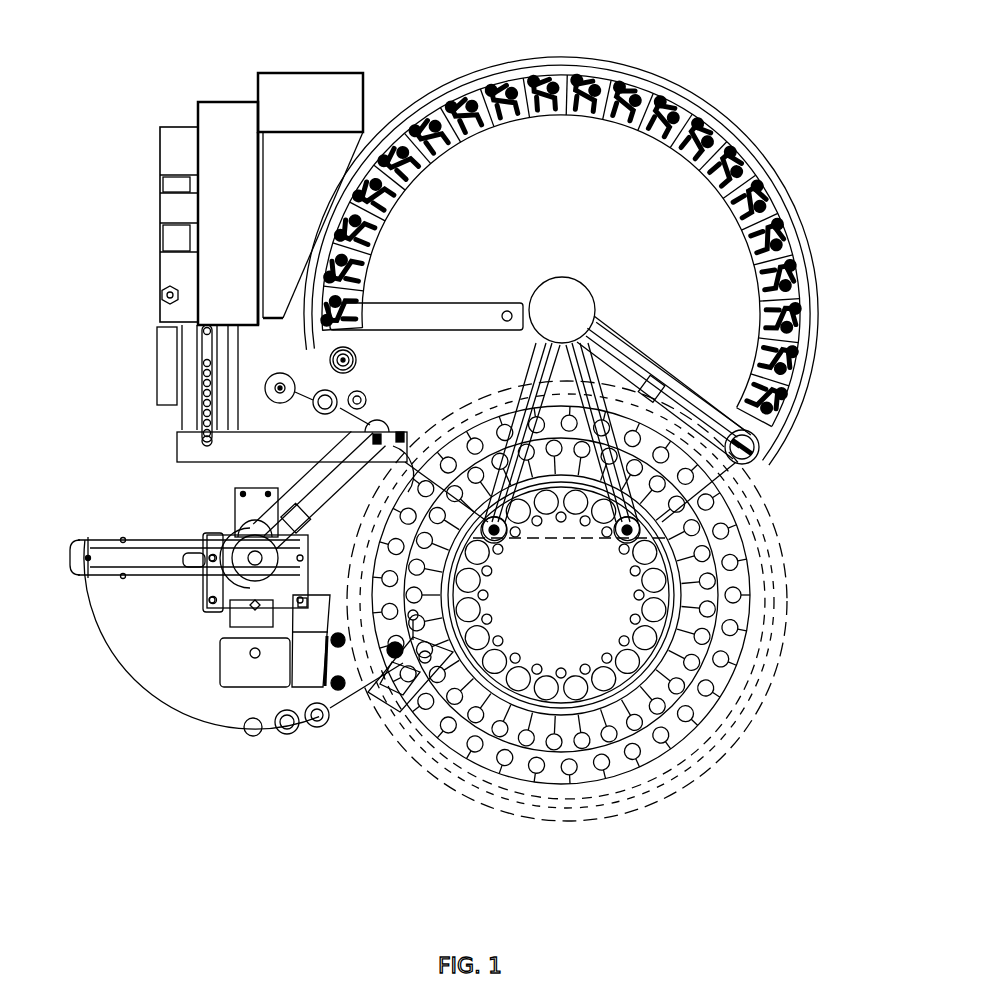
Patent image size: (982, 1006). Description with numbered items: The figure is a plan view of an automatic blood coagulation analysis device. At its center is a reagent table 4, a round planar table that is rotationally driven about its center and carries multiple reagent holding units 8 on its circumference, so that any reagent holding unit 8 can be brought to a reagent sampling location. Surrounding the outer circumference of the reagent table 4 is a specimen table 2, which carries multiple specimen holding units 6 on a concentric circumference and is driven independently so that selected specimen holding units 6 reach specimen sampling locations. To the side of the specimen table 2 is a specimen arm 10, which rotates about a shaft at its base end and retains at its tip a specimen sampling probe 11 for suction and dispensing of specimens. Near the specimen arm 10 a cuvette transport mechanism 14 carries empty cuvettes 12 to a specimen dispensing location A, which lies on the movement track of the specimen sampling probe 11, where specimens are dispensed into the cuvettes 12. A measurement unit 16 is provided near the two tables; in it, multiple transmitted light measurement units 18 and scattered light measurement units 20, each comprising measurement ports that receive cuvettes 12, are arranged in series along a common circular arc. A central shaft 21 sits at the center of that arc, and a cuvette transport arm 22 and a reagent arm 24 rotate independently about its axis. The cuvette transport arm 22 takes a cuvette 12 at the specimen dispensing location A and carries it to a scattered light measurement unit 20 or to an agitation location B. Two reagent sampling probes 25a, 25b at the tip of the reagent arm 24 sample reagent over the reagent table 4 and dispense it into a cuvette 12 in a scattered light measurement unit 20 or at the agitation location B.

The specimen table 2 is at (568, 795).
The reagent table 4 is at (560, 650).
The specimen holding unit 6 is at (448, 745).
The reagent holding unit 8 is at (648, 660).
The specimen arm 10 is at (127, 557).
The specimen sampling probe 11 is at (88, 557).
The cuvette 12 is at (200, 380).
The cuvette transport mechanism 14 is at (188, 450).
The measurement unit 16 is at (715, 108).
The transmitted light measurement unit 18 is at (438, 112).
The scattered light measurement unit 20 is at (645, 92).
The central shaft 21 is at (568, 302).
The cuvette transport arm 22 is at (453, 313).
The reagent arm 24 is at (683, 393).
The reagent sampling probe 25a is at (760, 447).
The reagent sampling probe 25b is at (755, 460).
The specimen dispensing location A is at (389, 446).
The agitation location B is at (359, 362).